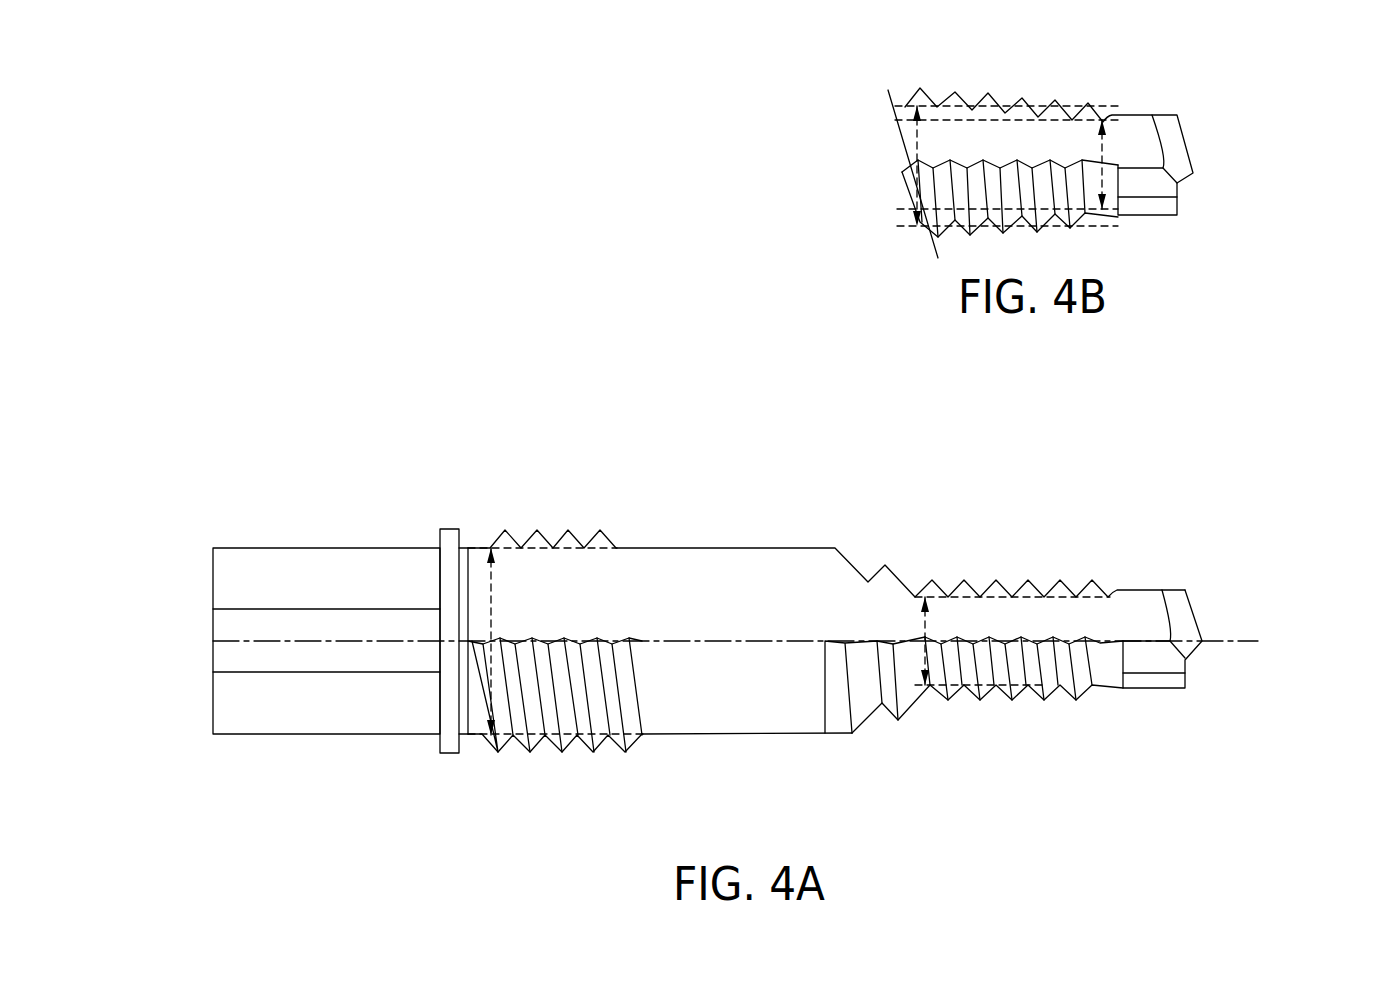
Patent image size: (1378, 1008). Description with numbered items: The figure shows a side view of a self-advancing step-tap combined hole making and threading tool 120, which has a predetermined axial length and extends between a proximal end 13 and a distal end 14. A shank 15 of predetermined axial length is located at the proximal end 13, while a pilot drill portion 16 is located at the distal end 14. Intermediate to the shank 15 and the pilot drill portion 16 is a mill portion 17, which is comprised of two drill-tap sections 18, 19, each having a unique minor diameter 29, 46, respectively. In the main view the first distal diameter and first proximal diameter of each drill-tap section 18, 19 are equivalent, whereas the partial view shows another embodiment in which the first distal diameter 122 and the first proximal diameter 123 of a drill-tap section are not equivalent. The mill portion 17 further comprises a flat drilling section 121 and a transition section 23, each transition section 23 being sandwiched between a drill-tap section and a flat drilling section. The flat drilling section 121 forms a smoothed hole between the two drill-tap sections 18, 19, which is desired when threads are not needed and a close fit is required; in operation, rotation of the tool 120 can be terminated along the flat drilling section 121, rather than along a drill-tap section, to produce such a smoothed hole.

In FIG. 4A, the proximal end 13 is at (213, 597).
In FIG. 4A, the distal end 14 is at (1218, 618).
In FIG. 4A, the shank 15 is at (317, 715).
In FIG. 4A, the pilot drill portion 16 is at (1155, 660).
In FIG. 4A, the mill portion 17 is at (747, 542).
In FIG. 4A, the drill-tap section 18 is at (1020, 677).
In FIG. 4A, the drill-tap section 19 is at (547, 717).
In FIG. 4A, the transition section 23 is at (870, 703).
In FIG. 4A, the minor diameter 29 is at (925, 620).
In FIG. 4A, the minor diameter 46 is at (495, 598).
In FIG. 4A, the self-advancing step-tap combined hole making and threading tool 120 is at (655, 453).
In FIG. 4A, the flat drilling section 121 is at (720, 707).
In FIG. 4B, the first distal diameter 122 is at (1102, 152).
In FIG. 4B, the first proximal diameter 123 is at (917, 150).